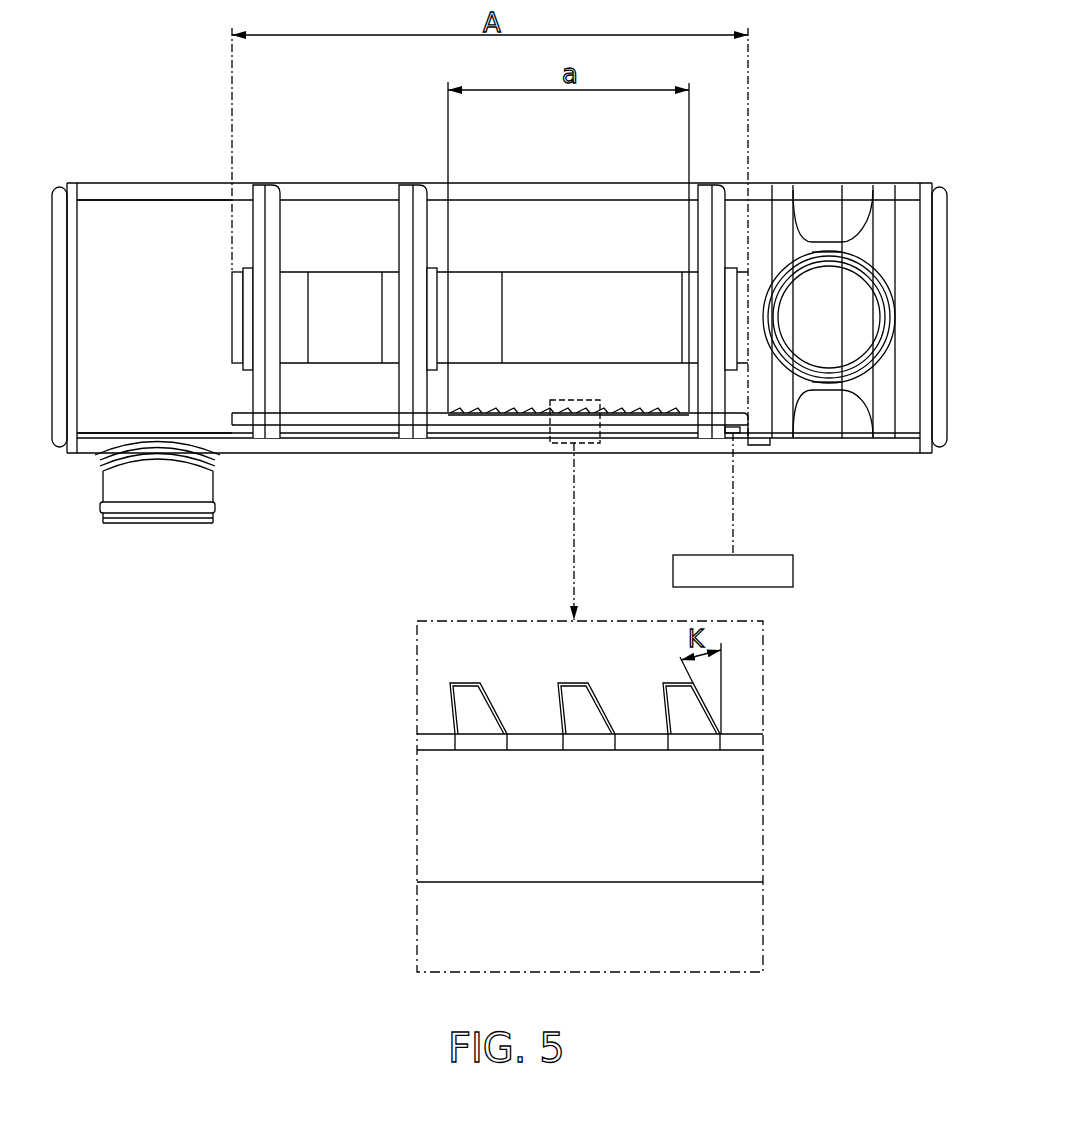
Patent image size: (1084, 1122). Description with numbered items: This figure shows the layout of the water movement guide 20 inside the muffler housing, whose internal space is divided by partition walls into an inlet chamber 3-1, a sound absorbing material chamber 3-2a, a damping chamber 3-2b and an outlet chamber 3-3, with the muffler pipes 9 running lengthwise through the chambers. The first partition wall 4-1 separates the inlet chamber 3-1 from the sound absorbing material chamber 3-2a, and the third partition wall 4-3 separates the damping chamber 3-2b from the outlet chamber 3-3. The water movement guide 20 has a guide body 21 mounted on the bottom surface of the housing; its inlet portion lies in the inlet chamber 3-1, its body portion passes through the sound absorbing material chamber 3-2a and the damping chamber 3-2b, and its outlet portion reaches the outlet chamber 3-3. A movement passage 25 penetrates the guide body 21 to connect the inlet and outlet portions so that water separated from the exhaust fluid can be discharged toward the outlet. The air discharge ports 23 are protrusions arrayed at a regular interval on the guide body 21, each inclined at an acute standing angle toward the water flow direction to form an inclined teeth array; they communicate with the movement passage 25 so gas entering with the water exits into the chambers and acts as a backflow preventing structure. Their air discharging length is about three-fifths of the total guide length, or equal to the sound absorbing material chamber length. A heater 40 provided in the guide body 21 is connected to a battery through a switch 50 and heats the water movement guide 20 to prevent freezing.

The inlet chamber 3-1 is at (780, 413).
The sound absorbing material chamber 3-2a is at (620, 392).
The damping chamber 3-2b is at (307, 397).
The outlet chamber 3-3 is at (212, 237).
The first partition wall 4-1 is at (705, 195).
The third partition wall 4-3 is at (269, 195).
The muffler pipes 9 is at (340, 290).
The water movement guide 20 is at (644, 588).
The guide body 21 is at (444, 418).
The air discharge ports 23 is at (497, 417).
The movement passage 25 is at (747, 827).
The heater 40 is at (732, 452).
The switch 50 is at (793, 567).